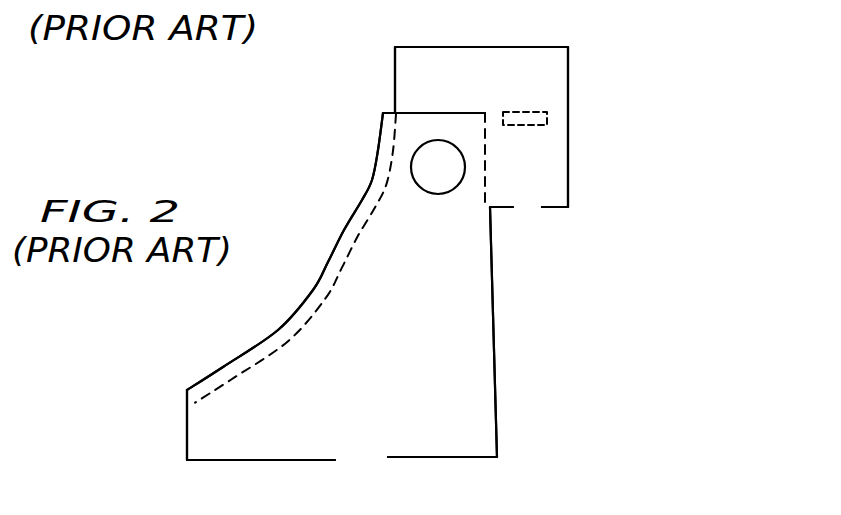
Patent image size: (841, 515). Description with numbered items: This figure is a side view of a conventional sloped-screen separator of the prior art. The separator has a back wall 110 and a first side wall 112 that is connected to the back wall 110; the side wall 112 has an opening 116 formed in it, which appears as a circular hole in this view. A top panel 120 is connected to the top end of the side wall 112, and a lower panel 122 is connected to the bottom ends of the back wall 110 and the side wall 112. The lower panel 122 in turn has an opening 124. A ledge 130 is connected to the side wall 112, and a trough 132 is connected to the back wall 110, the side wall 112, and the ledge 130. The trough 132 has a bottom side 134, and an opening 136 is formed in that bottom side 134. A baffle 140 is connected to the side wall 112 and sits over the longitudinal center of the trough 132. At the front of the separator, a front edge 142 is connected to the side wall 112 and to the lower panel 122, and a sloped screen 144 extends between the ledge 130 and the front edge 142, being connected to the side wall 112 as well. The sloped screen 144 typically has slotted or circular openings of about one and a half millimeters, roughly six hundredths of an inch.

The back wall 110 is at (492, 320).
The first side wall 112 is at (467, 395).
The opening 116 is at (443, 178).
The top panel 120 is at (477, 46).
The lower panel 122 is at (432, 457).
The opening 124 is at (348, 485).
The ledge 130 is at (448, 112).
The trough 132 is at (568, 150).
The bottom side 134 is at (560, 207).
The opening 136 is at (542, 241).
The baffle 140 is at (540, 112).
The front edge 142 is at (187, 427).
The sloped screen 144 is at (362, 232).